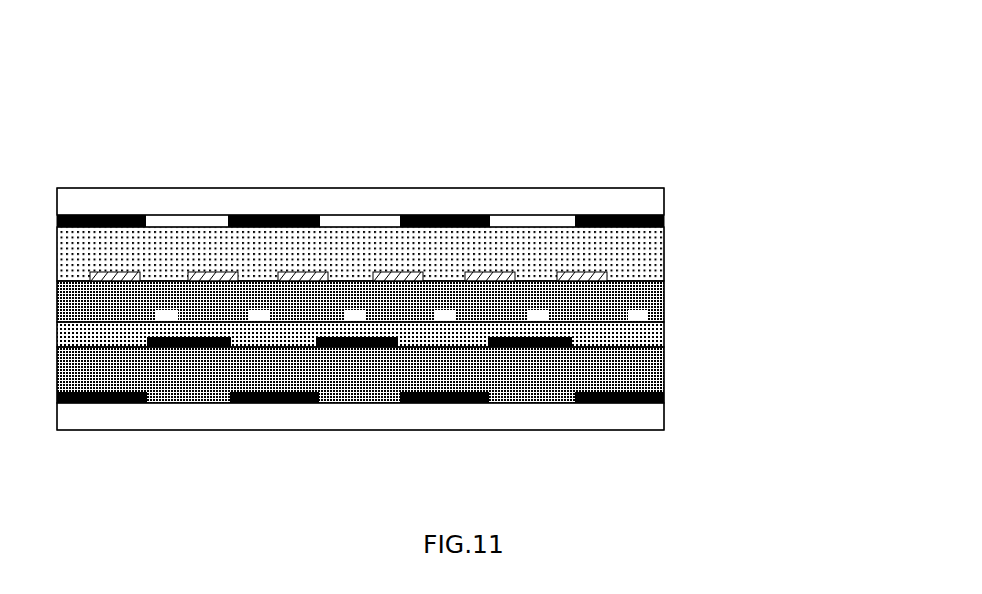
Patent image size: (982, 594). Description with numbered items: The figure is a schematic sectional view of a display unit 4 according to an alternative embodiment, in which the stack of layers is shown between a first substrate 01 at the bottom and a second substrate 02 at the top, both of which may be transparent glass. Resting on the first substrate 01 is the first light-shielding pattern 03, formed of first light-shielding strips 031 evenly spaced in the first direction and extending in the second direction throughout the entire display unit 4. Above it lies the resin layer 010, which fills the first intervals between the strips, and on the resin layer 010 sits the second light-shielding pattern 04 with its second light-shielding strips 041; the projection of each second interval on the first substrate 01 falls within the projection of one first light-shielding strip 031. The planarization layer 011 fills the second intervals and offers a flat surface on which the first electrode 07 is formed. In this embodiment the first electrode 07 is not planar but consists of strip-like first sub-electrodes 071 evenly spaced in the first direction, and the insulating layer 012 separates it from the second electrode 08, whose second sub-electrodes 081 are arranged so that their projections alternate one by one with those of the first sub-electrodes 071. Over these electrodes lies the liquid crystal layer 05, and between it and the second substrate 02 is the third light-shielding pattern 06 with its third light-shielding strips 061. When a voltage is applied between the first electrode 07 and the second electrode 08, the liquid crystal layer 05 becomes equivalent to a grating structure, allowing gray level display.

The first substrate 01 is at (664, 418).
The second substrate 02 is at (664, 200).
The first light-shielding pattern 03 is at (664, 396).
The first light-shielding strip 031 is at (477, 405).
The second light-shielding pattern 04 is at (664, 343).
The second light-shielding strip 041 is at (360, 348).
The liquid crystal layer 05 is at (664, 255).
The third light-shielding pattern 06 is at (664, 222).
The third light-shielding strip 061 is at (445, 222).
The first electrode 07 is at (664, 313).
The first sub-electrode 071 is at (353, 311).
The second electrode 08 is at (664, 277).
The second sub-electrode 081 is at (578, 280).
The resin layer 010 is at (664, 370).
The planarization layer 011 is at (664, 331).
The insulating layer 012 is at (664, 296).
The display unit 4 is at (802, 213).